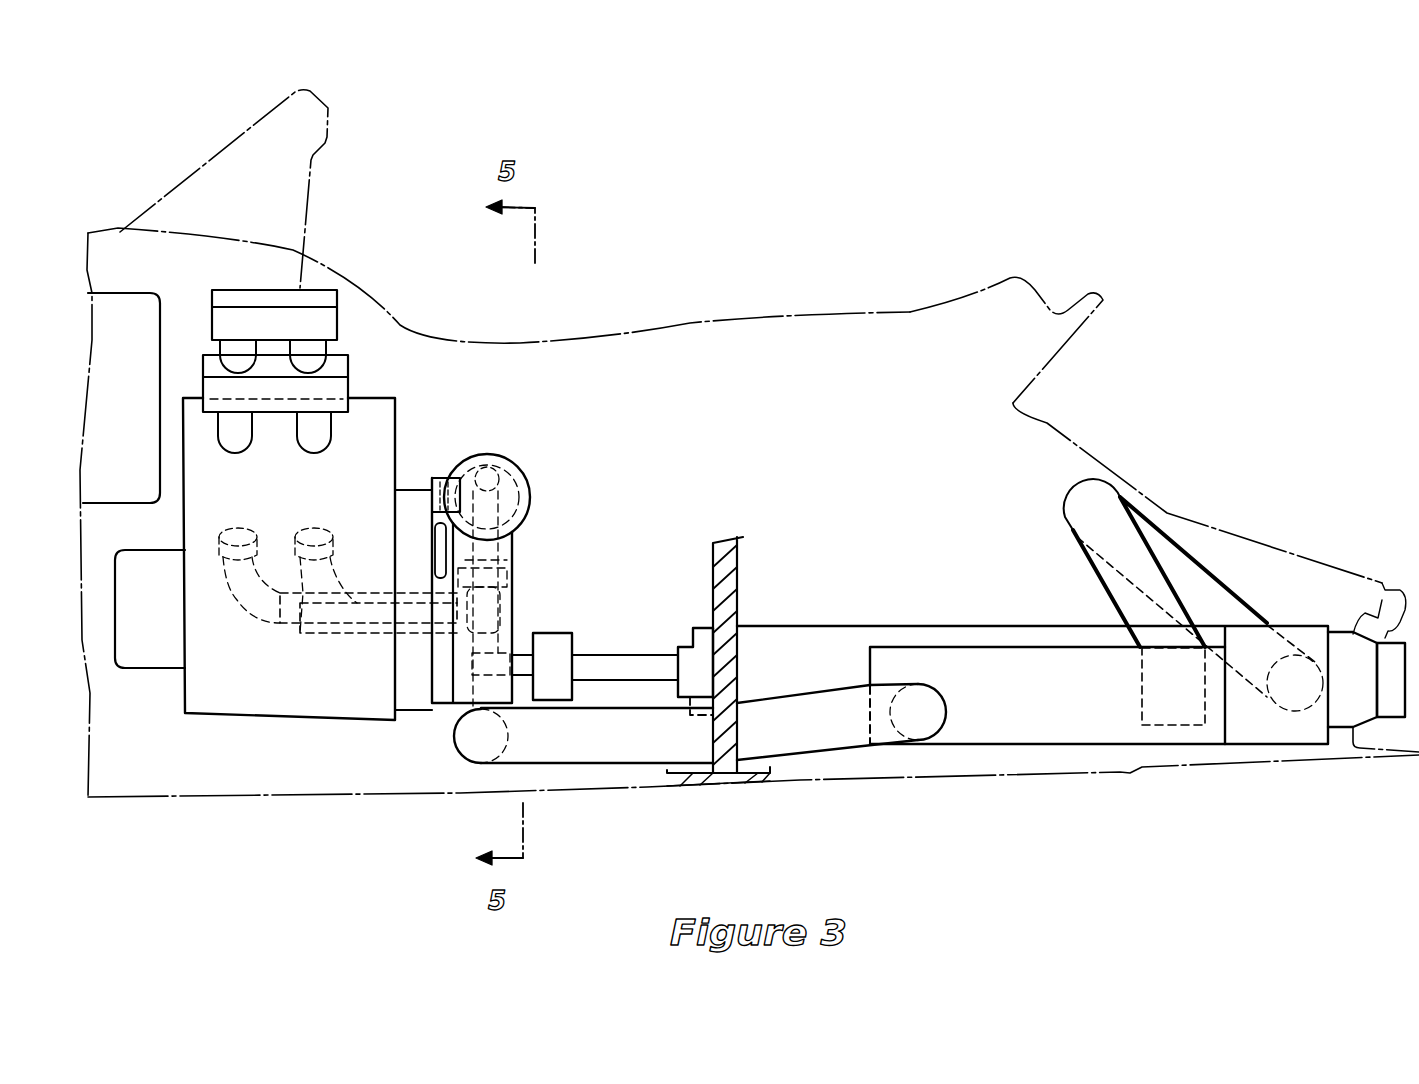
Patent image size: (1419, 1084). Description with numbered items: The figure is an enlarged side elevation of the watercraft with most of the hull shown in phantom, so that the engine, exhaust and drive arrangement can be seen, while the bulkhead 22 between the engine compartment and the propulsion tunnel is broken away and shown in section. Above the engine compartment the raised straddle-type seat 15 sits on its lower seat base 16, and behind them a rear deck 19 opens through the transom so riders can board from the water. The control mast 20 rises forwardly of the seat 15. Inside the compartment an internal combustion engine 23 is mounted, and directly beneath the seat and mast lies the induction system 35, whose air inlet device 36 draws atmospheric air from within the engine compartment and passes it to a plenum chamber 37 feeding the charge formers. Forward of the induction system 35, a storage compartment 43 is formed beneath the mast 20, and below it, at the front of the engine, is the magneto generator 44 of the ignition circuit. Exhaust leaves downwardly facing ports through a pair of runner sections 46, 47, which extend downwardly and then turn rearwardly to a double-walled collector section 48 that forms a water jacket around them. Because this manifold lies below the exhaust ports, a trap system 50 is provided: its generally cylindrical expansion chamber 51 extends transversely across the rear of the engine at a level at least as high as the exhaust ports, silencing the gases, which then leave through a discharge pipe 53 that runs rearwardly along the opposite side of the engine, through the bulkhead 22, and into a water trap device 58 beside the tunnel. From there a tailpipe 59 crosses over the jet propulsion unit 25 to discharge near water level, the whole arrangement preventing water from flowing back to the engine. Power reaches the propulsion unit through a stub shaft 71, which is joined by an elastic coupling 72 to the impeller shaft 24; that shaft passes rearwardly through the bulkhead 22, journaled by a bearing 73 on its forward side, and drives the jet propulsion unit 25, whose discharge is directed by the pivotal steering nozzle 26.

The seat 15 is at (690, 323).
The seat base 16 is at (1043, 421).
The rear deck 19 is at (1288, 553).
The control mast 20 is at (207, 157).
The bulkhead 22 is at (740, 568).
The internal combustion engine 23 is at (303, 727).
The impeller shaft 24 is at (630, 654).
The jet propulsion unit 25 is at (903, 614).
The steering nozzle 26 is at (1387, 640).
The induction system 35 is at (360, 356).
The air inlet device 36 is at (300, 290).
The plenum chamber 37 is at (346, 350).
The storage compartment 43 is at (117, 293).
The magneto generator 44 is at (135, 670).
The exhaust manifold runner section 46 is at (233, 607).
The exhaust manifold runner section 47 is at (280, 600).
The collector section 48 is at (362, 580).
The trap system 50 is at (540, 548).
The expansion chamber 51 is at (487, 454).
The discharge pipe 53 is at (575, 750).
The water trap device 58 is at (992, 746).
The tailpipe 59 is at (1068, 498).
The stub shaft 71 is at (520, 653).
The elastic coupling 72 is at (557, 632).
The bearing 73 is at (705, 627).